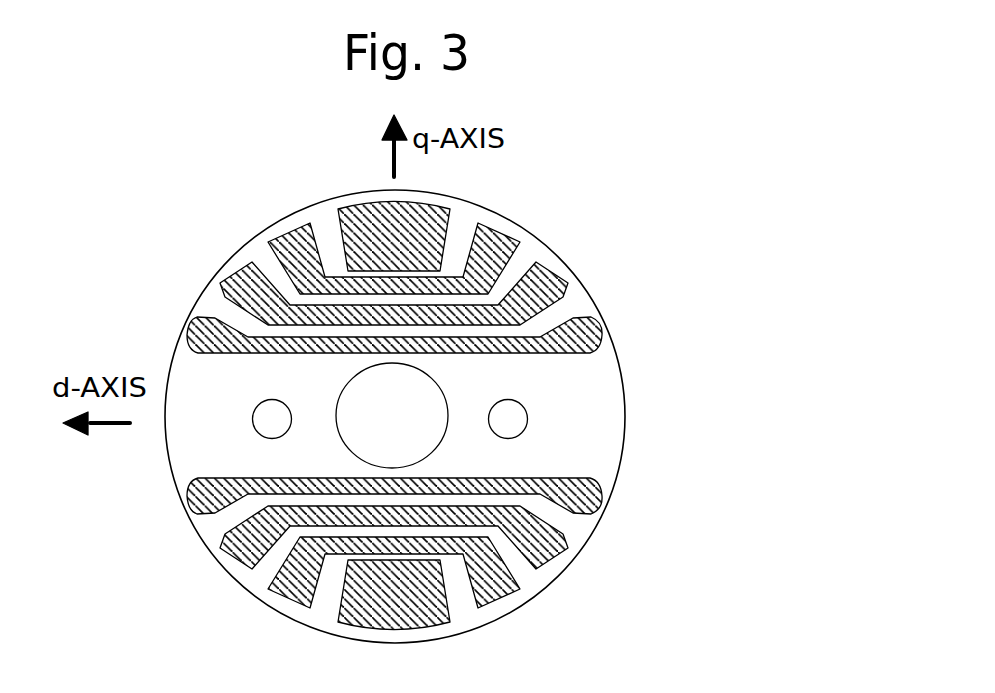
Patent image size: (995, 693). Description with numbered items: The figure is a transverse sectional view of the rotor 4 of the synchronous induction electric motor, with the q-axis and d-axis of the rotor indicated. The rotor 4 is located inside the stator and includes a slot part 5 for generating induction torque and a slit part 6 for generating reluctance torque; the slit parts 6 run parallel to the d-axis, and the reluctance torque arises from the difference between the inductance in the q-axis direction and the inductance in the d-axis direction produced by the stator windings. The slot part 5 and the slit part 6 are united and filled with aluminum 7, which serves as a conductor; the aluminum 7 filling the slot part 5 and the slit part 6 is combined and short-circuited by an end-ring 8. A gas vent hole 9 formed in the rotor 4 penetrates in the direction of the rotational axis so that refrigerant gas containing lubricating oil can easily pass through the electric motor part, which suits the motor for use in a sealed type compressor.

The rotor 4 is at (567, 243).
The slot part 5 is at (556, 291).
The slit part 6 is at (467, 320).
The aluminum 7 is at (443, 213).
The end-ring 8 is at (445, 437).
The gas vent hole 9 is at (527, 428).